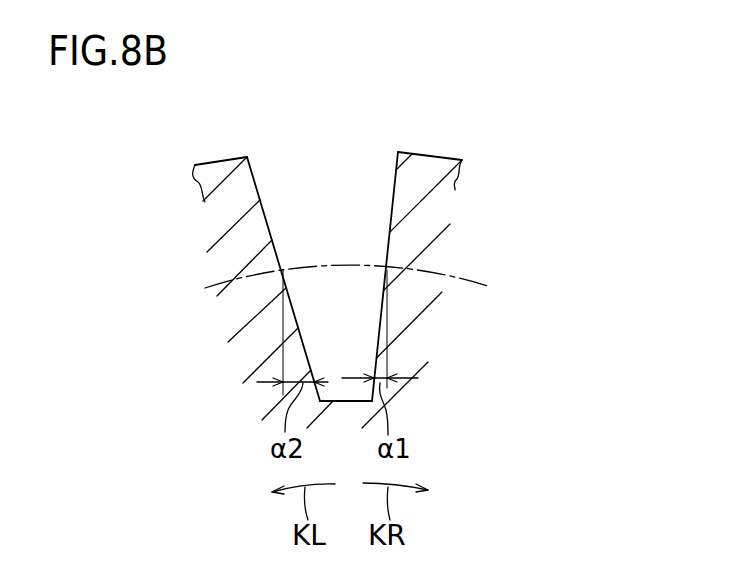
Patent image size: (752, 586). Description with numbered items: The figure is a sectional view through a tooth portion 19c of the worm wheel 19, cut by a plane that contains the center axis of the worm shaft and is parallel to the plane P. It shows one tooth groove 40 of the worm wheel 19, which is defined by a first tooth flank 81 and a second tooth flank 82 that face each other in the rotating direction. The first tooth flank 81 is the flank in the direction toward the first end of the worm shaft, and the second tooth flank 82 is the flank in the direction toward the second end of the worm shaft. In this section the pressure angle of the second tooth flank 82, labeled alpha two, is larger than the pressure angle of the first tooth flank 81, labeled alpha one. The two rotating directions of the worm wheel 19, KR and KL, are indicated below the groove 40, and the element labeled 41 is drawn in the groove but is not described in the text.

The worm wheel 19 is at (445, 112).
The tooth portion 19c is at (452, 158).
The tooth groove 40 is at (215, 170).
The groove 41 is at (323, 188).
The first tooth flank 81 is at (395, 183).
The second tooth flank 82 is at (257, 188).